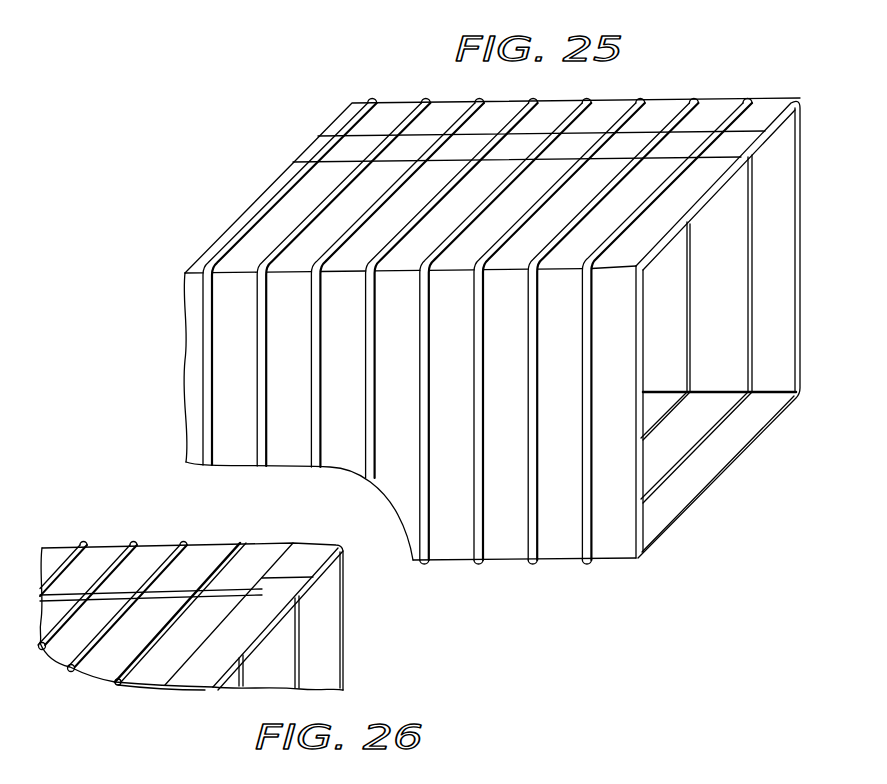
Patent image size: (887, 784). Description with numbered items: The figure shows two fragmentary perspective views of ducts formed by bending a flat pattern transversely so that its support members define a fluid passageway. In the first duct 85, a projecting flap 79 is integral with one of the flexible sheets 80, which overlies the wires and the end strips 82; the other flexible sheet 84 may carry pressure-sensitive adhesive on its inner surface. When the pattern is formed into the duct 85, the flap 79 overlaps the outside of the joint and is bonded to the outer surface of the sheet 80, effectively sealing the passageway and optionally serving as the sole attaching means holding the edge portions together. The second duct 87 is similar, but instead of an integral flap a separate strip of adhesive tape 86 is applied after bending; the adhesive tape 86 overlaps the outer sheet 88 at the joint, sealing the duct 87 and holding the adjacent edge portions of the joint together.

In FIG. 25, the projecting flap 79 is at (302, 152).
In FIG. 25, the flexible sheet 80 is at (262, 197).
In FIG. 25, the end strip 82 is at (790, 221).
In FIG. 25, the other flexible sheet 84 is at (730, 300).
In FIG. 25, the duct 85 is at (680, 96).
In FIG. 26, the adhesive tape 86 is at (147, 562).
In FIG. 26, the duct 87 is at (350, 583).
In FIG. 26, the outer sheet 88 is at (190, 636).